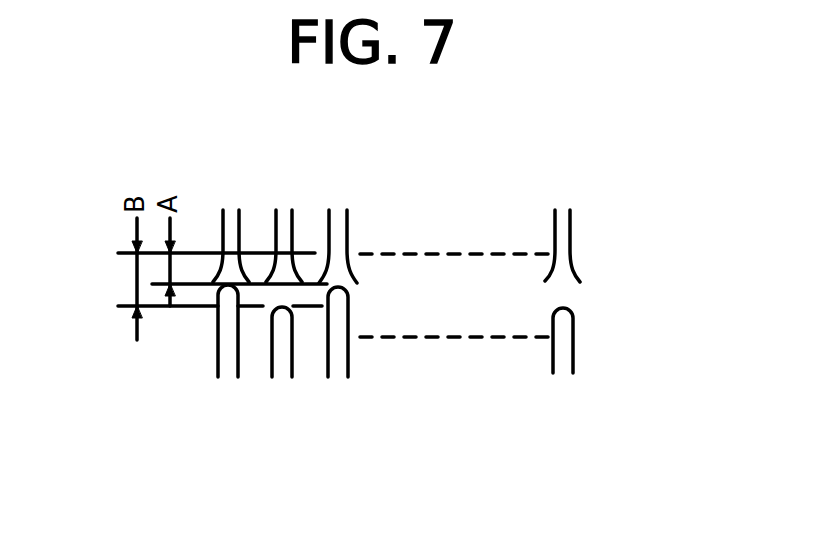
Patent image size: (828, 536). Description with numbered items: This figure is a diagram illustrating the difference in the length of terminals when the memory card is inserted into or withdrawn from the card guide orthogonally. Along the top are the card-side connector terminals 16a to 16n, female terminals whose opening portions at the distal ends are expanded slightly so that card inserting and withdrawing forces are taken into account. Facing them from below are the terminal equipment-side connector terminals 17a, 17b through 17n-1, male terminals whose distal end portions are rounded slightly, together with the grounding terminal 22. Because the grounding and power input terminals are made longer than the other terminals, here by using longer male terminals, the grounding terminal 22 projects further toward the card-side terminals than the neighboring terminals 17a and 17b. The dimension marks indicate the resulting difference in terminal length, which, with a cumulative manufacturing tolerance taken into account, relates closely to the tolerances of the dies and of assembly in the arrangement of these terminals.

The card-side connector terminal 16a is at (233, 213).
The card-side connector terminal 16n is at (565, 213).
The terminal equipment-side connector terminal 17a is at (228, 377).
The terminal equipment-side connector terminal 17b is at (280, 377).
The grounding terminal 22 is at (337, 377).
The terminal equipment-side connector terminal 17n-1 is at (562, 360).